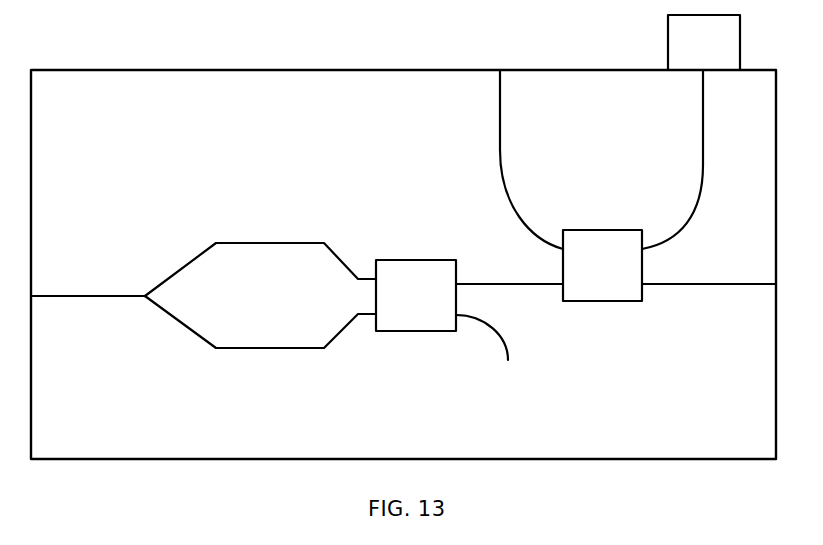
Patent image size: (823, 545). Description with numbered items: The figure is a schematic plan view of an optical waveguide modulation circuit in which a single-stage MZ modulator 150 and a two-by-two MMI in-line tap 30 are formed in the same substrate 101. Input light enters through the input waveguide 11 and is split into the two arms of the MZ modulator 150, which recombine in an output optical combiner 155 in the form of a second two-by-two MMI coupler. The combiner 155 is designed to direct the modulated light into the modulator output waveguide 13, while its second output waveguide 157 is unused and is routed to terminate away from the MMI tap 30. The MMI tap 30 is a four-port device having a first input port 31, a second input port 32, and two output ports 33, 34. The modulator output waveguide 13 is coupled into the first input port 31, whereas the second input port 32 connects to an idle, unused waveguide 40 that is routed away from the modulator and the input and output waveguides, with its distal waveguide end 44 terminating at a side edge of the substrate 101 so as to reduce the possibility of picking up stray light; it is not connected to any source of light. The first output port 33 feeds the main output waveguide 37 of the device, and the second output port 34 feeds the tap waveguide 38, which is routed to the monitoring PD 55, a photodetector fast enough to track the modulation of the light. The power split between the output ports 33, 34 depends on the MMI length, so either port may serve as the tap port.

The substrate 101 is at (126, 109).
The input waveguide 11 is at (84, 283).
The single-stage MZ modulator 150 is at (288, 221).
The output optical combiner 155 is at (412, 258).
The modulator output waveguide 13 is at (492, 285).
The second output waveguide 157 is at (481, 326).
The MMI tap 30 is at (614, 303).
The first input port 31 is at (558, 302).
The second input port 32 is at (552, 242).
The first output port 33 is at (645, 287).
The second output port 34 is at (646, 250).
The main output waveguide 37 is at (713, 284).
The unused waveguide 40 is at (513, 209).
The distal waveguide end 44 is at (500, 69).
The tap waveguide 38 is at (697, 185).
The monitoring PD 55 is at (668, 32).